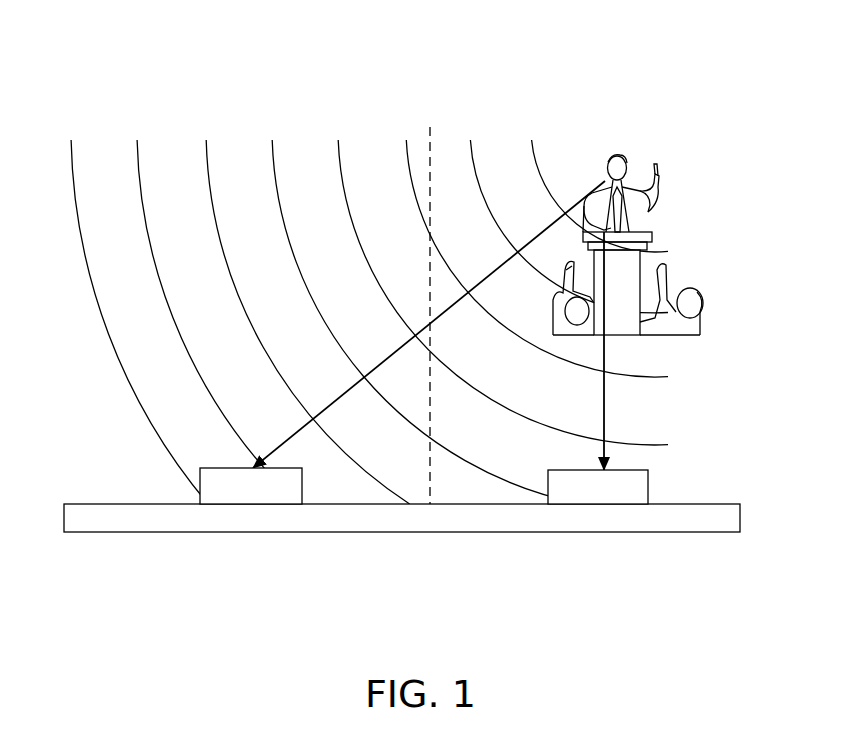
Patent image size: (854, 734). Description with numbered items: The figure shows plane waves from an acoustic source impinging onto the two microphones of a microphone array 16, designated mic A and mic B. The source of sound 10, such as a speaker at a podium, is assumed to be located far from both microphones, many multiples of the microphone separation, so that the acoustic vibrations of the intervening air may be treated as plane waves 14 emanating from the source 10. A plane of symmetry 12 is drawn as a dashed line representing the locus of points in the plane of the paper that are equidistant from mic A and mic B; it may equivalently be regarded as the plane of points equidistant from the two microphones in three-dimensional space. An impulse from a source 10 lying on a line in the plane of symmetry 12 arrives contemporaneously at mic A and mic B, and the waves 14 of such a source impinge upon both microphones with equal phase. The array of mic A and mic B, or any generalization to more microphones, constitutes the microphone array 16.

The source of sound 10 is at (695, 206).
The plane of symmetry 12 is at (432, 148).
The plane waves 14 is at (137, 149).
The microphone array 16 is at (658, 543).